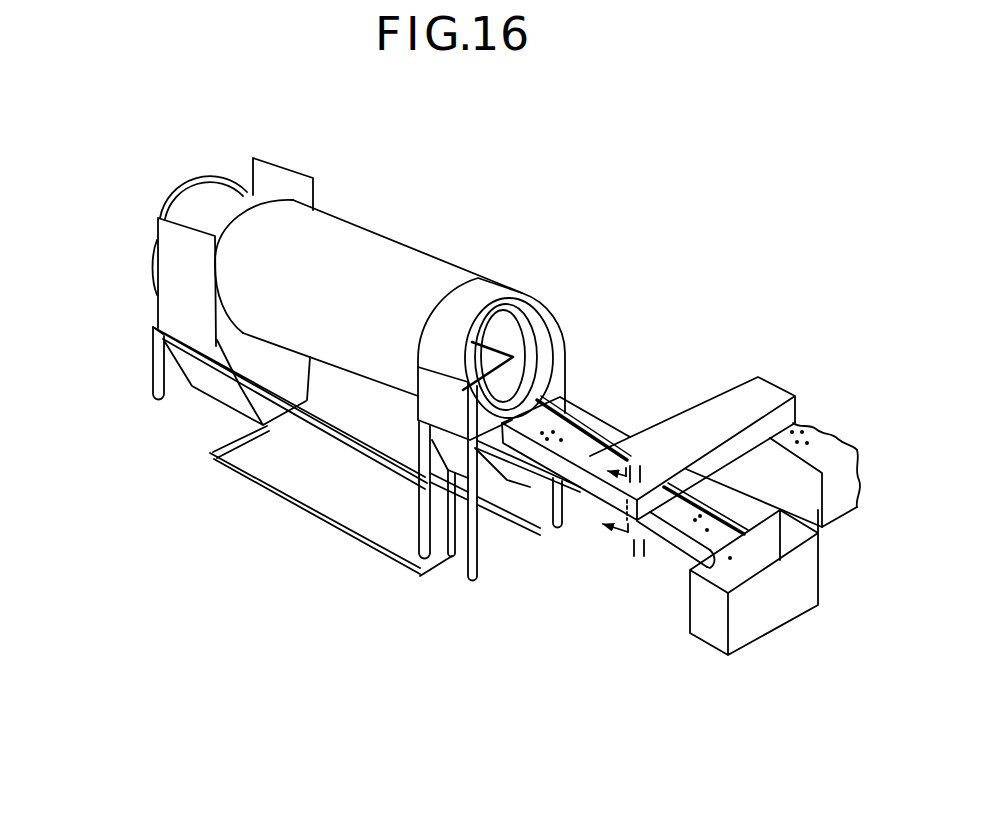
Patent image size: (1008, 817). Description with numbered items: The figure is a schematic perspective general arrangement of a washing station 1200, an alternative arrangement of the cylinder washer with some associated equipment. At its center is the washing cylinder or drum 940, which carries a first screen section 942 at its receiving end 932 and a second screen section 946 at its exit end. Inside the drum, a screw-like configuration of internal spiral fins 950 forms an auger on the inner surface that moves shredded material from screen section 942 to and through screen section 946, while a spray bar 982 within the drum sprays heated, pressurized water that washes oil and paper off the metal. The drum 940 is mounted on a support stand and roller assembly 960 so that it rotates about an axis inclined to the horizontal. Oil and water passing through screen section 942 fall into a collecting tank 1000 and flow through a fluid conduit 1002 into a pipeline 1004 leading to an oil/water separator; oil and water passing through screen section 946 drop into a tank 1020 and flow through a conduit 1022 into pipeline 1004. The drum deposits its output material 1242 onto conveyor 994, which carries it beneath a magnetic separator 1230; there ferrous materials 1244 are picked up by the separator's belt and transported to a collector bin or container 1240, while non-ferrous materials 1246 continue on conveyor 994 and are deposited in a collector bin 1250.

The washing station 1200 is at (356, 355).
The receiving end 932 is at (200, 177).
The first screen section 942 is at (212, 212).
The washing cylinder or drum 940 is at (418, 242).
The second screen section 946 is at (521, 286).
The internal spiral fins 950 is at (541, 338).
The spray bar 982 is at (511, 360).
The collecting tank 1000 is at (226, 394).
The fluid conduit 1002 is at (248, 441).
The pipeline 1004 is at (208, 457).
The tank 1020 is at (499, 465).
The conduit 1022 is at (441, 569).
The support stand and roller assembly 960 is at (484, 565).
The output material 1242 is at (572, 424).
The magnetic separator 1230 is at (713, 418).
The ferrous materials 1244 is at (803, 425).
The conveyor 994 is at (727, 512).
The non-ferrous materials 1246 is at (700, 543).
The collector bin or container 1240 is at (845, 503).
The collector bin 1250 is at (777, 615).